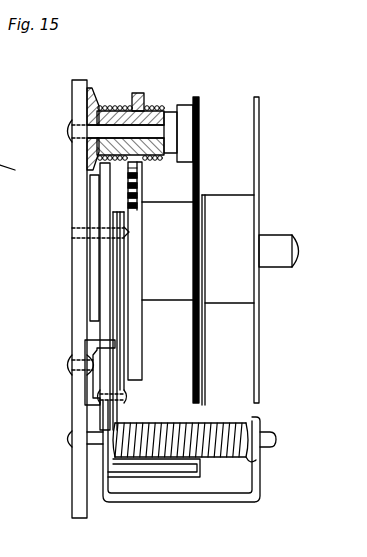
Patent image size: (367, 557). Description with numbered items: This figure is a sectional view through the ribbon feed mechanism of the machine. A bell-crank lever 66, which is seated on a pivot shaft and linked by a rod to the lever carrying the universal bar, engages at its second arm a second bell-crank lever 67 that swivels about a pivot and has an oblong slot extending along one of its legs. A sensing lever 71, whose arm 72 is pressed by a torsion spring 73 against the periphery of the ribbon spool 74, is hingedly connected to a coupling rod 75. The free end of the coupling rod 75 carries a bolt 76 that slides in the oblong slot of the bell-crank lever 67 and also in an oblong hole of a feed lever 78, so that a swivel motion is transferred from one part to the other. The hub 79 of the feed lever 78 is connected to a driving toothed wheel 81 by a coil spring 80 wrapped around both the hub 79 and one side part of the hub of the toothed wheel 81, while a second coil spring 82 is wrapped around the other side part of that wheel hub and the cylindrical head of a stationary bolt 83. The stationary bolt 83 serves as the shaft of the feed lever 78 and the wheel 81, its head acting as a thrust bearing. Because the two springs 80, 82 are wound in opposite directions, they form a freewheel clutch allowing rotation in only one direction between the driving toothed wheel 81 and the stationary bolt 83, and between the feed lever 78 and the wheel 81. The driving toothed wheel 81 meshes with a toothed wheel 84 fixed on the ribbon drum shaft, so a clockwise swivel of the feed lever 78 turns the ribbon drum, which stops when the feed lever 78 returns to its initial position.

The bell-crank lever 66 is at (0, 377).
The second bell-crank lever 67 is at (100, 293).
The sensing lever 71 is at (228, 500).
The arm 72 is at (228, 377).
The torsion spring 73 is at (162, 450).
The ribbon spool 74 is at (259, 175).
The coupling rod 75 is at (113, 340).
The bolt 76 is at (78, 234).
The feed lever 78 is at (91, 182).
The hub 79 is at (97, 108).
The coil spring 80 is at (112, 108).
The driving toothed wheel 81 is at (140, 100).
The second coil spring 82 is at (168, 110).
The stationary bolt 83 is at (188, 106).
The toothed wheel 84 is at (137, 337).